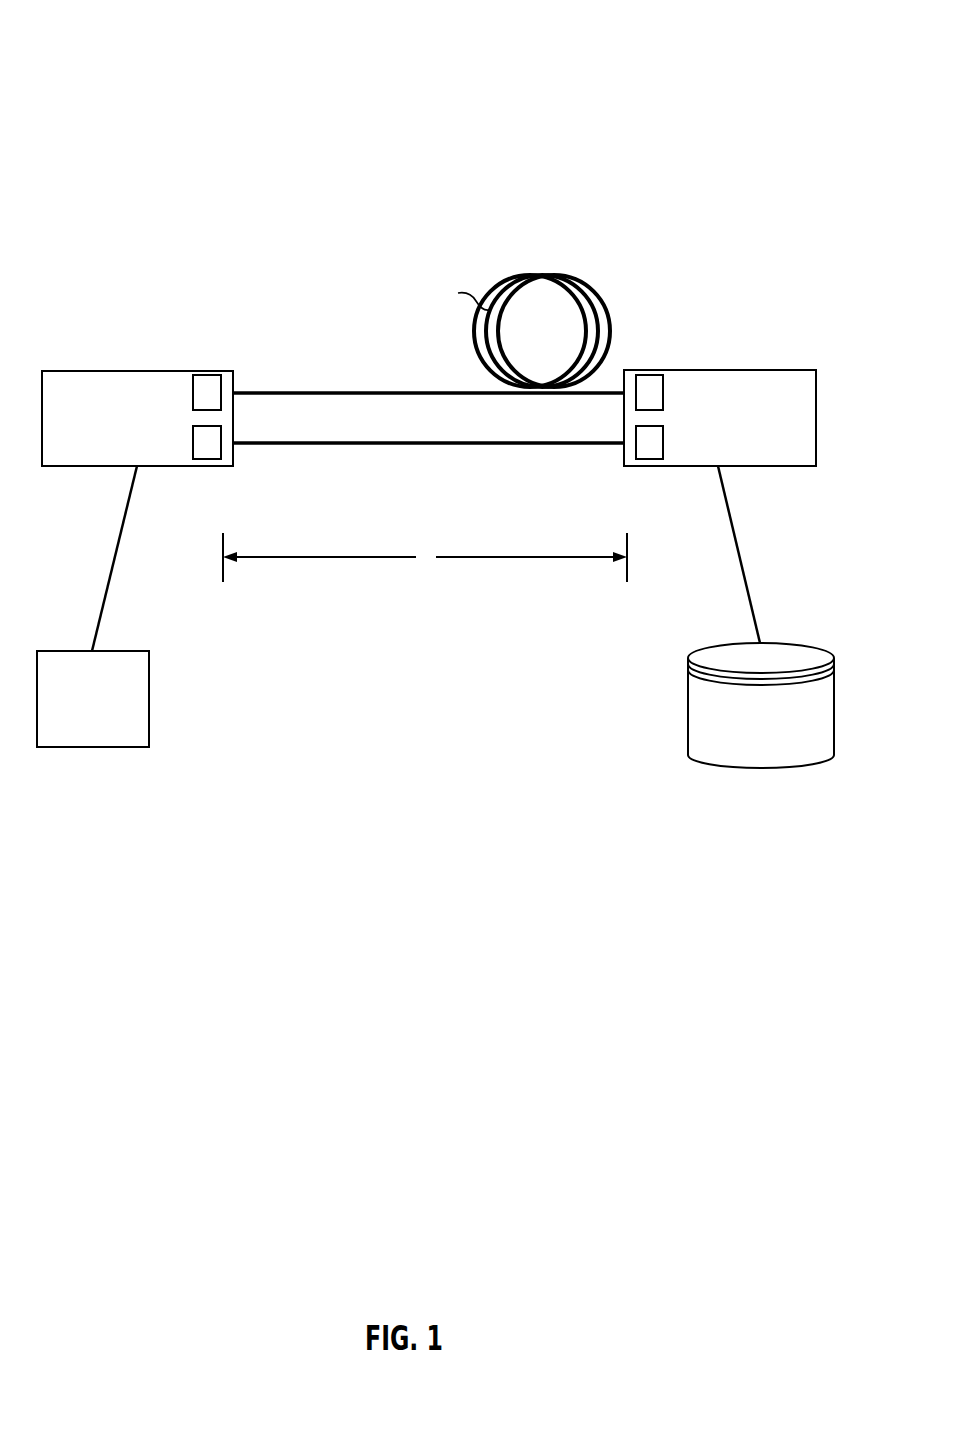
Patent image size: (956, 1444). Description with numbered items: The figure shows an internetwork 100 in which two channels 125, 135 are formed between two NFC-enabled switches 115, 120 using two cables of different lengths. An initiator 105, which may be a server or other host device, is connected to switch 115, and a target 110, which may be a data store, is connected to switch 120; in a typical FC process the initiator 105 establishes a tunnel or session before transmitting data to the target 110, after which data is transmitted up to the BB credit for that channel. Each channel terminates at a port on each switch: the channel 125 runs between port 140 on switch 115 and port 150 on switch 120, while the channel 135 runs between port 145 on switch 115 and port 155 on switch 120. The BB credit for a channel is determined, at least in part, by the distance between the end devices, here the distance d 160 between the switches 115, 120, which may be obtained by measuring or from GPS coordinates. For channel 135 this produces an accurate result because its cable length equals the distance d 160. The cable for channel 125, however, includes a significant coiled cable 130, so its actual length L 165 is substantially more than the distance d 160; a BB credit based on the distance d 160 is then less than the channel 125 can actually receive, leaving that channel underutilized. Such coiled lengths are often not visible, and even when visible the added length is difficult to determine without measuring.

The internetwork 100 is at (424, 29).
The initiator 105 is at (93, 606).
The target 110 is at (761, 617).
The switch 115 is at (137, 418).
The switch 120 is at (720, 418).
The channel 125 is at (379, 388).
The coiled cable 130 is at (582, 283).
The channel 135 is at (379, 446).
The port of FC switch 1 140 is at (213, 383).
The port of FC switch 1 145 is at (213, 450).
The port of FC switch 2 150 is at (643, 384).
The port of FC switch 2 155 is at (643, 451).
The distance d 160 is at (425, 563).
The actual length L 165 is at (453, 313).